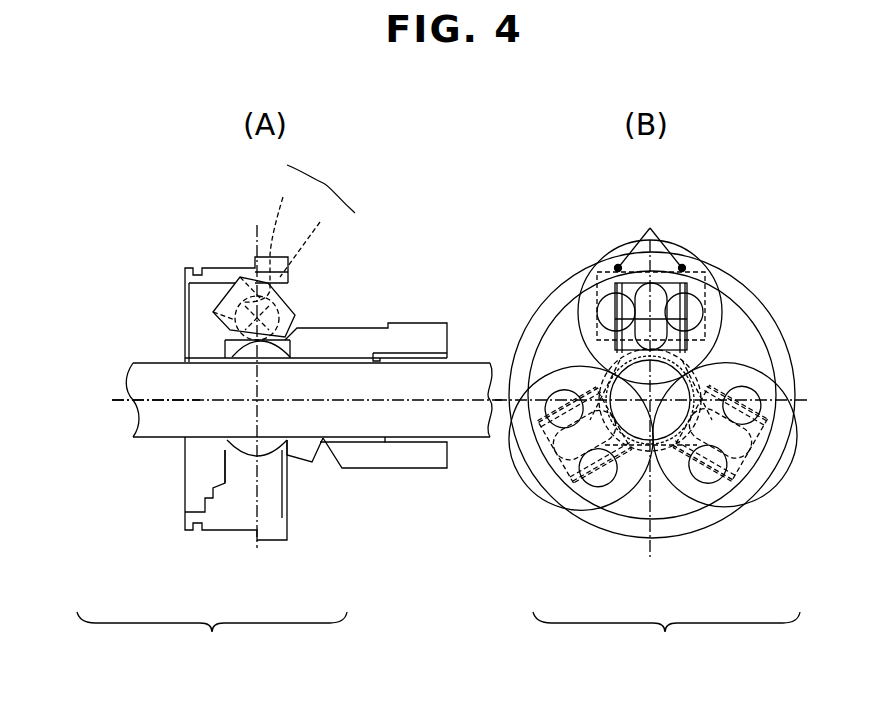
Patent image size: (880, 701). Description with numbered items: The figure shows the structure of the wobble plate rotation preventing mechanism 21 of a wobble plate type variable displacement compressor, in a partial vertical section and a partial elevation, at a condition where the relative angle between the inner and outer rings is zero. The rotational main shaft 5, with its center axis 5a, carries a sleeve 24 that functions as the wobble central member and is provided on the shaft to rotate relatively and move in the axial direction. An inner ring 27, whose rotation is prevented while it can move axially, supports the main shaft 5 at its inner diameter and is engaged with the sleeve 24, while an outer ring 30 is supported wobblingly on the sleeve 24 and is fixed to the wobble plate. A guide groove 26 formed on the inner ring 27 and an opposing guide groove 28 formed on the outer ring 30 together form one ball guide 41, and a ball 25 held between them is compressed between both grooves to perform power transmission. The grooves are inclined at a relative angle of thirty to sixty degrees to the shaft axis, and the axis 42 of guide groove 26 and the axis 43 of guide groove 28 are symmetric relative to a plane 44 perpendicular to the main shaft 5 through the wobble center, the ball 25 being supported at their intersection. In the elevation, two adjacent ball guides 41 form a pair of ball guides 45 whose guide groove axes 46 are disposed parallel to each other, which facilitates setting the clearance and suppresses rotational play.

The rotational main shaft 5 is at (197, 408).
The center axis of rotational main shaft 5a is at (178, 411).
The rotation preventing mechanism 21 is at (438, 636).
The sleeve 24 is at (265, 452).
The ball 25 is at (257, 318).
The guide groove 26 is at (309, 241).
The inner ring 27 is at (383, 453).
The guide groove 28 is at (270, 239).
The outer ring 30 is at (248, 490).
The ball guide 41 is at (810, 316).
The axis of guide groove 42 is at (220, 337).
The axis of guide groove 43 is at (292, 338).
The plane 44 is at (253, 247).
The pair of ball guides 45 is at (702, 258).
The axes of the guide grooves 46 is at (650, 238).